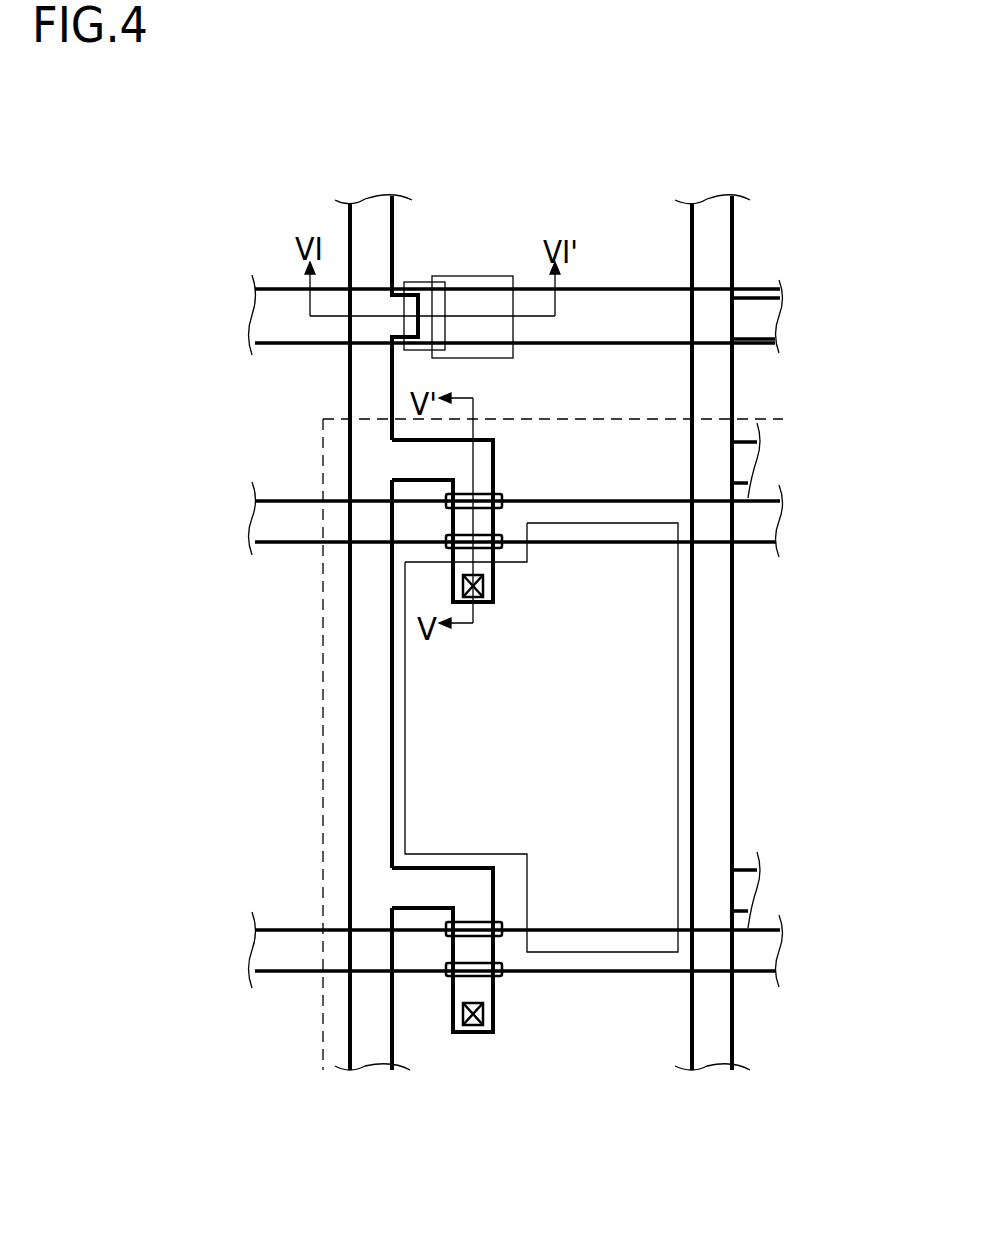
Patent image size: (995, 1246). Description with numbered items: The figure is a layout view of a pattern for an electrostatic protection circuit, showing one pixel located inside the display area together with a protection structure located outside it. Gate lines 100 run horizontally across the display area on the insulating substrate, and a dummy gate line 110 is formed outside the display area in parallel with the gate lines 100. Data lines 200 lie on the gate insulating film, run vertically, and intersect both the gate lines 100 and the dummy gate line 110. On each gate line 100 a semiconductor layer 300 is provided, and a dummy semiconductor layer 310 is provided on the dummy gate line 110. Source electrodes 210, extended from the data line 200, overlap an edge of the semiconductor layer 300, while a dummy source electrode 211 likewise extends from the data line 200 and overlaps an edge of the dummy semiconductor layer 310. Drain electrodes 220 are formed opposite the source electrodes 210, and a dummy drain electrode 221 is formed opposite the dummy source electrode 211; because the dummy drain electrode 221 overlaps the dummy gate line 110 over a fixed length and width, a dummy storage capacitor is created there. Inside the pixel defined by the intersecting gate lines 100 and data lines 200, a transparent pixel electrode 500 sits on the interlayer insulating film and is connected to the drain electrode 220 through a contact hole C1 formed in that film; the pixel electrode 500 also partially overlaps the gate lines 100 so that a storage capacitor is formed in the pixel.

The gate line 100 is at (645, 543).
The dummy gate line 110 is at (625, 290).
The data line 200 is at (350, 443).
The source electrode 210 is at (500, 502).
The dummy source electrode 211 is at (420, 296).
The drain electrode 220 is at (500, 540).
The dummy drain electrode 221 is at (465, 277).
The semiconductor layer 300 is at (447, 547).
The dummy semiconductor layer 310 is at (393, 350).
The pixel electrode 500 is at (678, 684).
The contact hole C1 is at (484, 598).